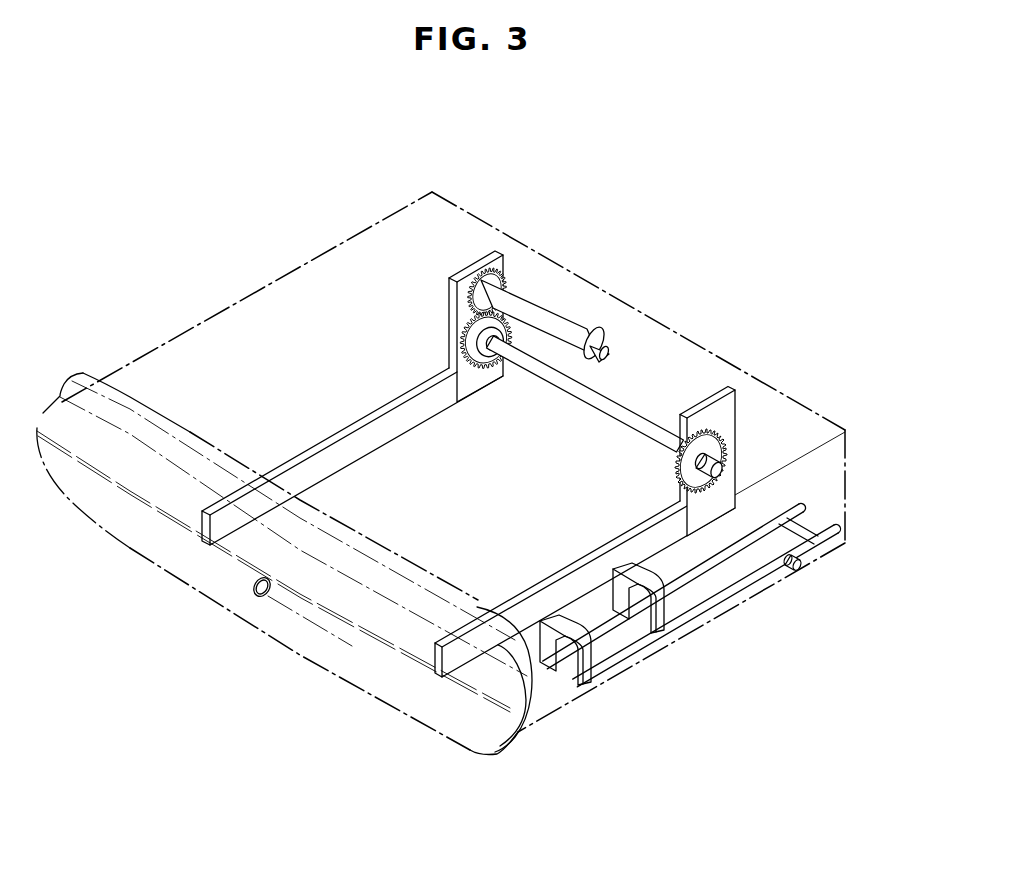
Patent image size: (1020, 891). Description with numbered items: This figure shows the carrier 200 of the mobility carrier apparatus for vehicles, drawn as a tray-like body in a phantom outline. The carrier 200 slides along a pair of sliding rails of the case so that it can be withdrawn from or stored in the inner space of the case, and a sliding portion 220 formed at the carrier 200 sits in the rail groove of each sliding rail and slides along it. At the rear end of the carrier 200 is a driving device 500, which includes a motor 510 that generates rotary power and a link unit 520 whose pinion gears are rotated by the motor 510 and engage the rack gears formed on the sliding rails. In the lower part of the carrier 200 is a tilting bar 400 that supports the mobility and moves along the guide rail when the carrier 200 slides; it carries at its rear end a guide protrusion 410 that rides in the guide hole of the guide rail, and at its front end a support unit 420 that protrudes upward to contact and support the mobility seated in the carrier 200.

The carrier 200 is at (292, 251).
The sliding portion 220 is at (440, 645).
The tilting bar 400 is at (752, 605).
The guide protrusion 410 is at (800, 567).
The support unit 420 is at (588, 660).
The driving device 500 is at (588, 332).
The motor 510 is at (530, 306).
The link unit 520 is at (623, 413).